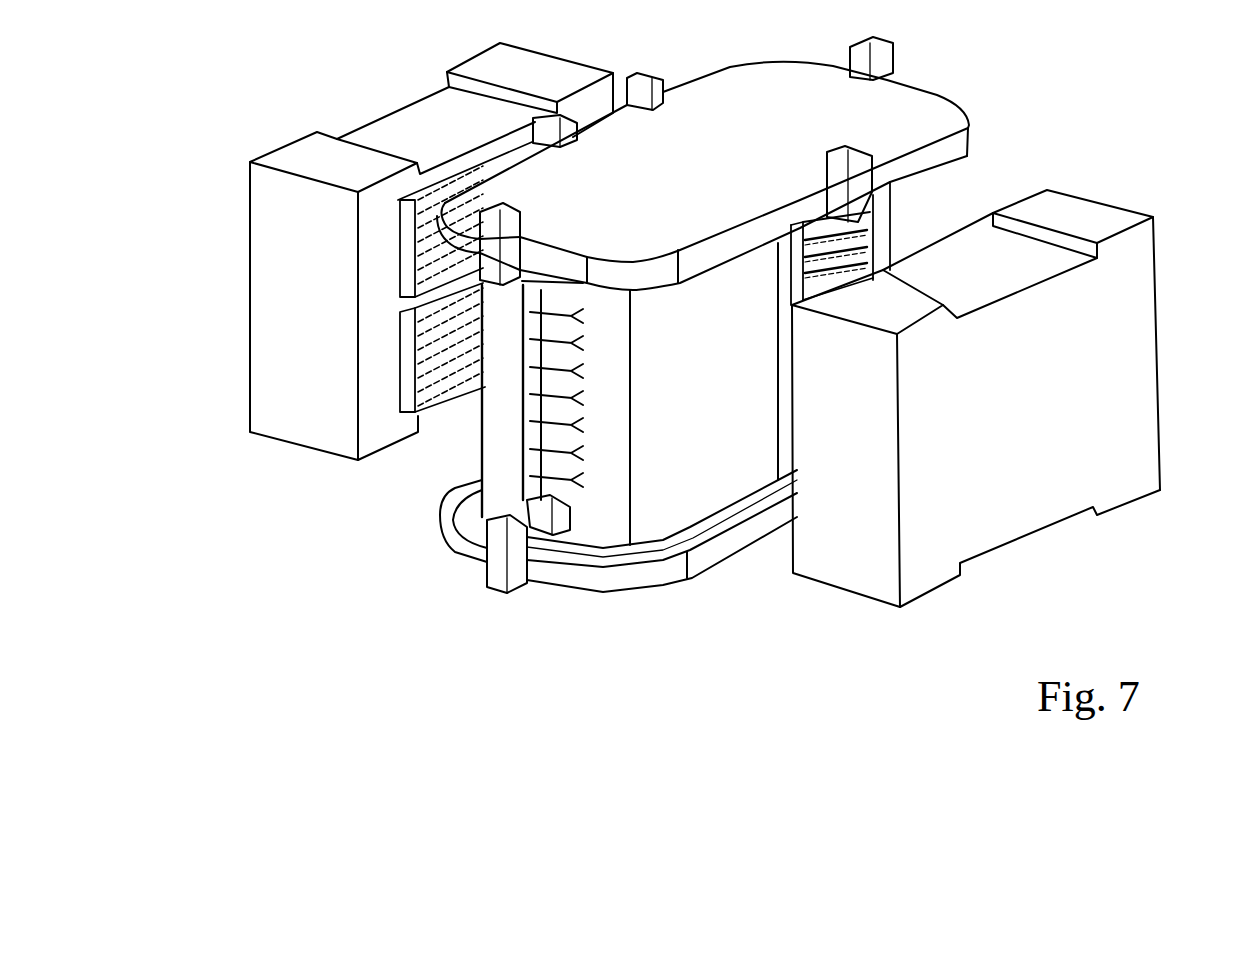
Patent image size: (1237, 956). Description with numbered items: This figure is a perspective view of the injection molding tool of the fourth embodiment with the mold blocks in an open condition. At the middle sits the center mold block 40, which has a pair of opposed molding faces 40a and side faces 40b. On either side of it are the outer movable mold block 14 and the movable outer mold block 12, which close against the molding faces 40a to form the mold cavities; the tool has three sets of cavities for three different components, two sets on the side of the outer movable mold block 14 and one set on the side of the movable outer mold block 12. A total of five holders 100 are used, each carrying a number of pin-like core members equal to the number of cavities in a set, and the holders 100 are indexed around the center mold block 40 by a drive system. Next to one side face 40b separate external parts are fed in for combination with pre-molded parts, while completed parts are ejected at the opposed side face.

The movable outer mold block 12 is at (1113, 387).
The outer movable mold block 14 is at (278, 328).
The center mold block 40 is at (654, 515).
The molding face 40a is at (663, 473).
The side face 40b is at (607, 480).
The holder 100 is at (510, 432).